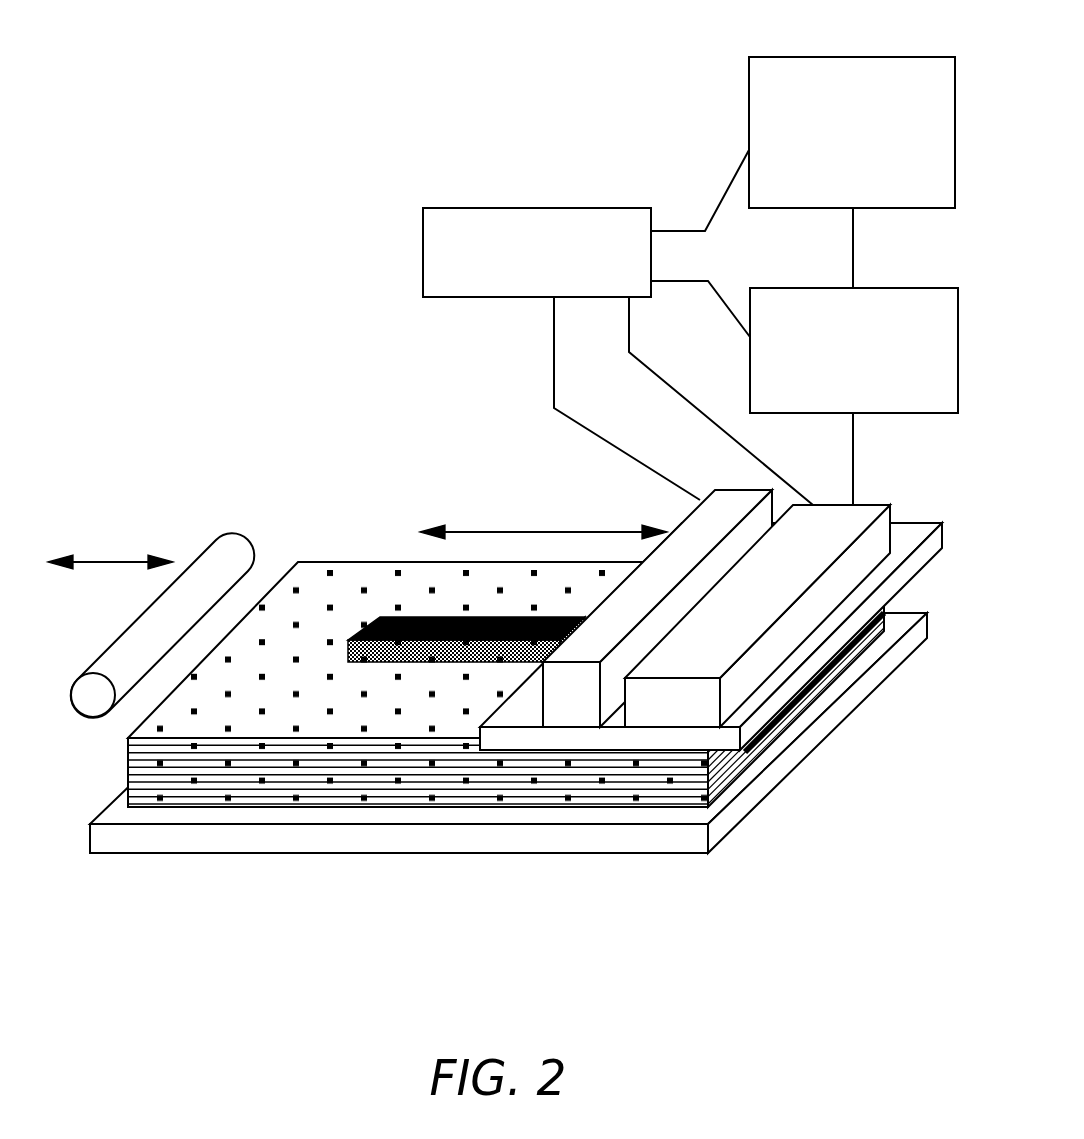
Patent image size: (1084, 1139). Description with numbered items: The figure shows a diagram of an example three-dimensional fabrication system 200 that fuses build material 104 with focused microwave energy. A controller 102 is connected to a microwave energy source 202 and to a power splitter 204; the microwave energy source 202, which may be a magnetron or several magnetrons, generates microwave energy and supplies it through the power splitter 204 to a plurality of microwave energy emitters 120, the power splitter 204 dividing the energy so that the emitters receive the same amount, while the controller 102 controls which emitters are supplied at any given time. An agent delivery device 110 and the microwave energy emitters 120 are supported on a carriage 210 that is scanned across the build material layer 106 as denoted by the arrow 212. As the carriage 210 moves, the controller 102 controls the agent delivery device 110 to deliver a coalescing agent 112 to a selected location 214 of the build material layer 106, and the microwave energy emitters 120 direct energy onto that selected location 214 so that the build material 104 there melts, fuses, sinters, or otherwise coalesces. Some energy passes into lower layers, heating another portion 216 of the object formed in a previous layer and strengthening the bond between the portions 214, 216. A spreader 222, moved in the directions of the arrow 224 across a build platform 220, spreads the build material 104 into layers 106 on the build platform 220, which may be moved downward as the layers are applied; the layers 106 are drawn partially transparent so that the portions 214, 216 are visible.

The 3D fabrication system 200 is at (452, 60).
The controller 102 is at (516, 279).
The microwave energy source 202 is at (832, 187).
The power splitter 204 is at (834, 392).
The build material 104 is at (500, 736).
The build material layer 106 is at (328, 740).
The coalescing agent 112 is at (433, 711).
The selected location 214 is at (417, 648).
The another portion of the 3D object 216 is at (468, 690).
The agent delivery device 110 is at (568, 706).
The microwave energy emitters 120 is at (807, 615).
The carriage 210 is at (755, 723).
The arrow 212 is at (462, 530).
The build platform 220 is at (682, 857).
The spreader 222 is at (97, 717).
The arrow 224 is at (97, 562).